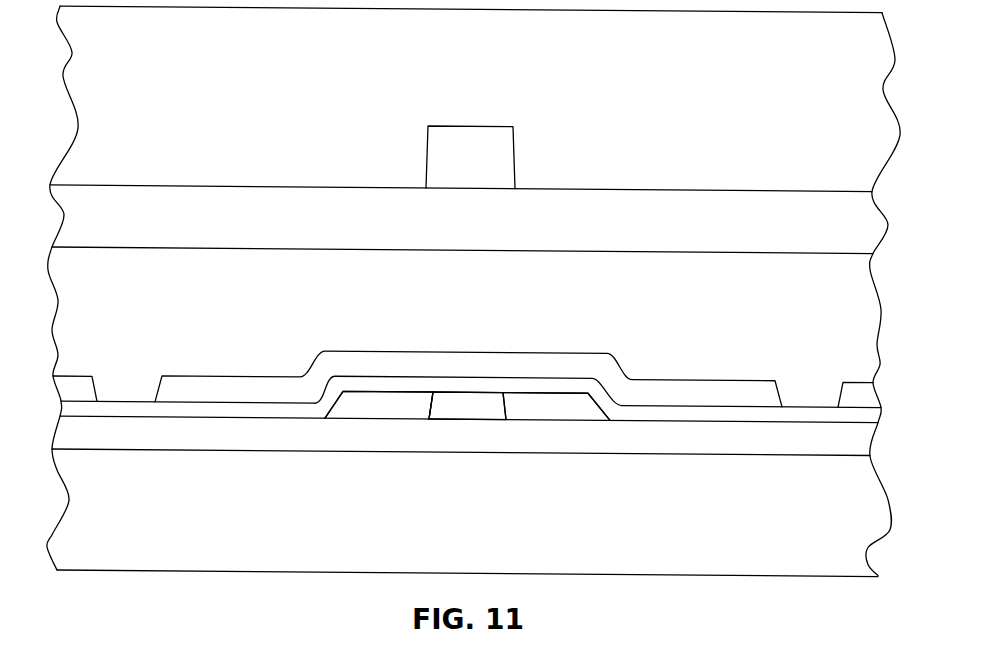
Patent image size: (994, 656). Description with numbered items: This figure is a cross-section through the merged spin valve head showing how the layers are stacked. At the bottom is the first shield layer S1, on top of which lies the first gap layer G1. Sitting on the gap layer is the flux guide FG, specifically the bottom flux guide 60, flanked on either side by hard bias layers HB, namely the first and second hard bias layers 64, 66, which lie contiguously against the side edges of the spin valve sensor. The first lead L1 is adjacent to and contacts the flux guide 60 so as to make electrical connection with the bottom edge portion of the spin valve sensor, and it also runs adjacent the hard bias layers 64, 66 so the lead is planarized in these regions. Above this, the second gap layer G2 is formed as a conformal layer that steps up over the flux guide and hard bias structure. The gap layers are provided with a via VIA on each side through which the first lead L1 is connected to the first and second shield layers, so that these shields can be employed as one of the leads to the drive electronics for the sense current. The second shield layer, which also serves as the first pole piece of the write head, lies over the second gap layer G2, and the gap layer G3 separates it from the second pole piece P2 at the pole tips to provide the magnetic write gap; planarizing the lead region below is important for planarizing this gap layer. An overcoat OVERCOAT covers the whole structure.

The bottom flux guide 60 is at (492, 416).
The first hard bias layer 64 is at (578, 416).
The second hard bias layer 66 is at (353, 416).
The first lead L1 is at (226, 411).
The first gap layer G1 is at (465, 436).
The second gap layer G2 is at (468, 378).
The gap layer G3 is at (462, 228).
The second pole piece P2 is at (470, 157).
The first shield layer S1 is at (467, 545).
The hard bias layer HB is at (467, 405).
The flux guide FG is at (467, 406).
The via VIA is at (463, 376).
The overcoat OVERCOAT is at (461, 108).